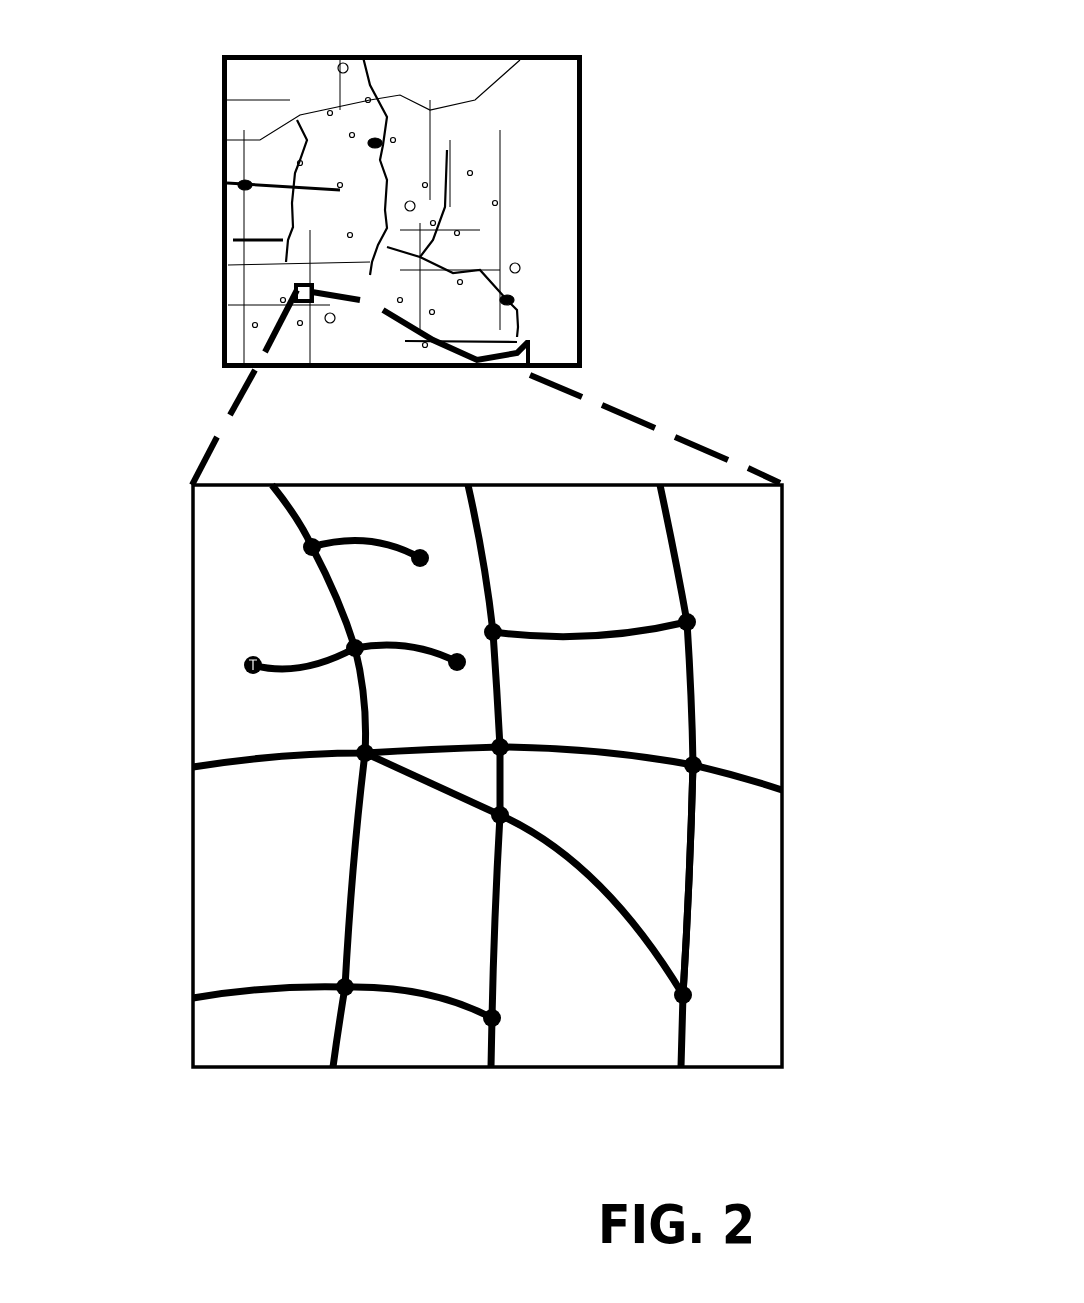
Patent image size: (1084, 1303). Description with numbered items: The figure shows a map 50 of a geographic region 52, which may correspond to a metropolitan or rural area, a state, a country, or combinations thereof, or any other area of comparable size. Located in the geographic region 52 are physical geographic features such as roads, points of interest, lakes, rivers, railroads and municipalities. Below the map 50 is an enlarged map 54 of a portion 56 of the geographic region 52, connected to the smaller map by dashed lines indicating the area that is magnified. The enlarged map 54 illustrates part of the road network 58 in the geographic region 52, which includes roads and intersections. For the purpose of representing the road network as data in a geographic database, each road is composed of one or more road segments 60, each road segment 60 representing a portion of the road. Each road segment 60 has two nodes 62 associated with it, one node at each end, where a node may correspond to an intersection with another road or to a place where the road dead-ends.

The map 50 is at (208, 238).
The geographic region 52 is at (528, 97).
The enlarged map 54 is at (790, 547).
The portion 56 is at (598, 1034).
The road network 58 is at (287, 786).
The road segment 60 is at (292, 674).
The node 62 is at (247, 624).